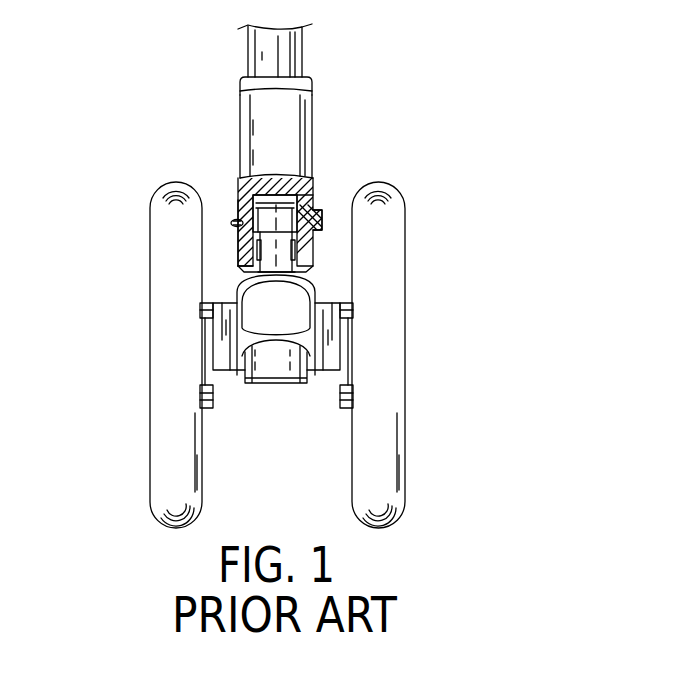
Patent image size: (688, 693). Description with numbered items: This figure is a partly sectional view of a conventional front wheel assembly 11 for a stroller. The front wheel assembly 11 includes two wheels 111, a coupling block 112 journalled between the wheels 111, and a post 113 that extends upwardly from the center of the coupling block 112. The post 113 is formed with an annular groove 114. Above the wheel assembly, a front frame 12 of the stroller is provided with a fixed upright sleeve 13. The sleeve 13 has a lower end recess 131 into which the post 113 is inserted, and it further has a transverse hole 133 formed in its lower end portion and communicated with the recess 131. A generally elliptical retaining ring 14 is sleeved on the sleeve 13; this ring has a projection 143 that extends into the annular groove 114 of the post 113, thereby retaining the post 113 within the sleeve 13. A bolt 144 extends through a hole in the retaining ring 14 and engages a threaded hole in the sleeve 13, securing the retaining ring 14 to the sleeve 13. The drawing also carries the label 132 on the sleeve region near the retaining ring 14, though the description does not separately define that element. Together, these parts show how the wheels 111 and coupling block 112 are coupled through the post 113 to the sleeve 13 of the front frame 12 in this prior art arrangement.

The front wheel assembly 11 is at (427, 138).
The wheels 111 is at (162, 349).
The coupling block 112 is at (315, 297).
The post 113 is at (317, 260).
The annular groove 114 is at (315, 207).
The front frame 12 is at (297, 48).
The upright sleeve 13 is at (250, 110).
The lower end recess 131 is at (240, 273).
The clamp wall 132 is at (233, 232).
The transverse hole 133 is at (318, 223).
The retaining ring 14 is at (320, 227).
The projection 143 is at (312, 210).
The bolt 144 is at (233, 219).